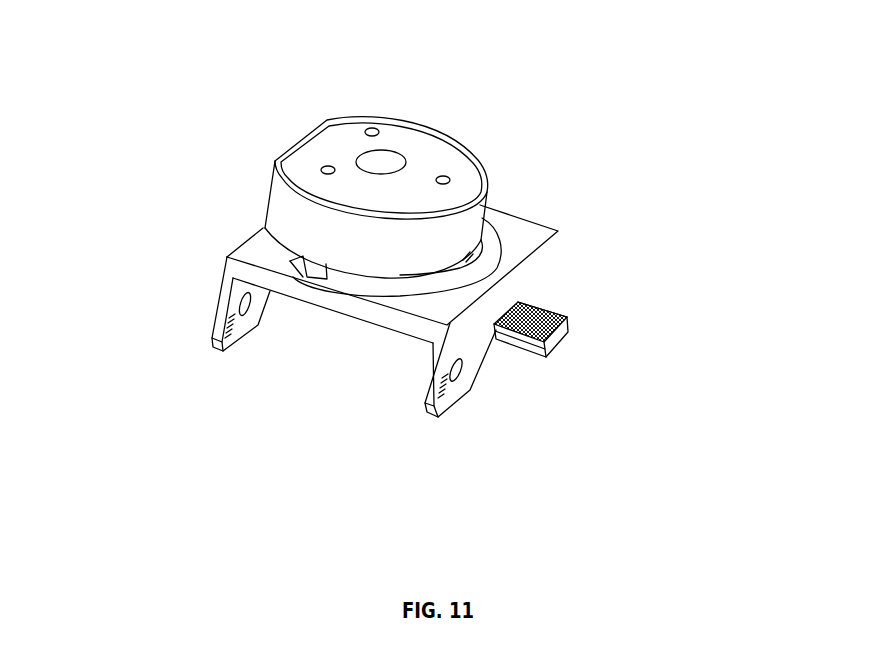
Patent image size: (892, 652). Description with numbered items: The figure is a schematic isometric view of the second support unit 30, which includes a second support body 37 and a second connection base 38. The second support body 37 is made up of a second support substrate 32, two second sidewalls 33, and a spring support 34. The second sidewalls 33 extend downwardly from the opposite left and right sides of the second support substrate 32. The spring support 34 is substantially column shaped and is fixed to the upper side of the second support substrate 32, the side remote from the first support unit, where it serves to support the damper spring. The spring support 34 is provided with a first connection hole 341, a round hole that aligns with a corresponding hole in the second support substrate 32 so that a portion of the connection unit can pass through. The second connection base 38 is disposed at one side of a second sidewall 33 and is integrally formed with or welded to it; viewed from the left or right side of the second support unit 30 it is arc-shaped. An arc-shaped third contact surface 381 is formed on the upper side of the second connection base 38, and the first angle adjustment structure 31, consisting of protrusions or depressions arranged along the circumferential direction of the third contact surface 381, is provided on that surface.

The second support unit 30 is at (187, 82).
The first angle adjustment structure 31 is at (566, 312).
The second support substrate 32 is at (523, 237).
The second sidewall 33 is at (537, 280).
The spring support 34 is at (466, 178).
The first connection hole 341 is at (382, 163).
The second support body 37 is at (715, 58).
The second connection base 38 is at (548, 350).
The third contact surface 381 is at (513, 353).